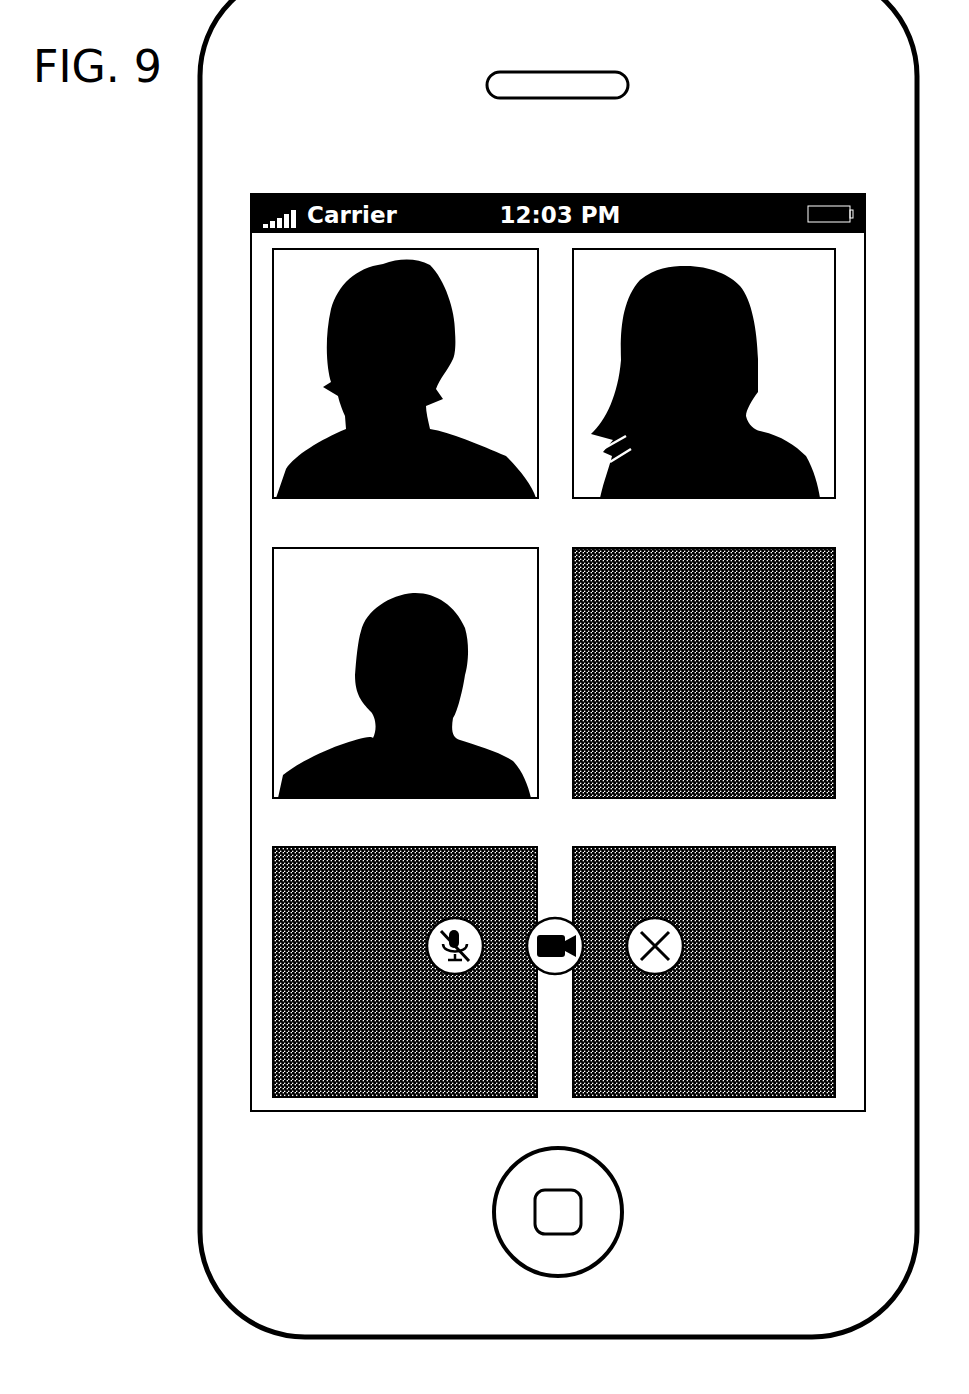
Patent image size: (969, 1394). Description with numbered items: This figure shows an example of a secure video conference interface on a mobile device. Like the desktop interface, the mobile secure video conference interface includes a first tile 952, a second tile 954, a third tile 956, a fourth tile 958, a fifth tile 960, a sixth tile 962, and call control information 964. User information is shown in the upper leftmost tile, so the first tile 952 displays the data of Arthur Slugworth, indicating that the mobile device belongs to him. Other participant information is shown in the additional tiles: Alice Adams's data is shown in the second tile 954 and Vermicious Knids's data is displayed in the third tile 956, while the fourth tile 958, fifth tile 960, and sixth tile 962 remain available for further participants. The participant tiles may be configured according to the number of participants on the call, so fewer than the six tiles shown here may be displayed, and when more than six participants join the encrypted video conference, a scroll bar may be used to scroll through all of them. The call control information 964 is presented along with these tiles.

The first tile 952 is at (405, 392).
The second tile 954 is at (704, 392).
The third tile 956 is at (405, 692).
The fourth tile 958 is at (704, 673).
The fifth tile 960 is at (405, 972).
The sixth tile 962 is at (704, 972).
The call control information 964 is at (685, 920).